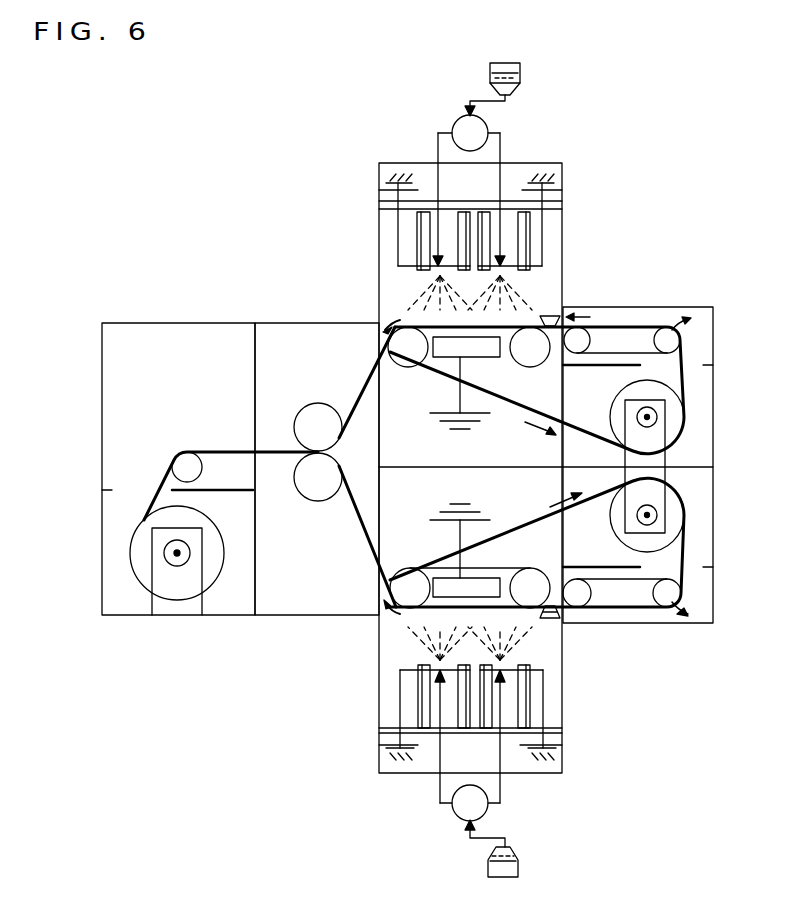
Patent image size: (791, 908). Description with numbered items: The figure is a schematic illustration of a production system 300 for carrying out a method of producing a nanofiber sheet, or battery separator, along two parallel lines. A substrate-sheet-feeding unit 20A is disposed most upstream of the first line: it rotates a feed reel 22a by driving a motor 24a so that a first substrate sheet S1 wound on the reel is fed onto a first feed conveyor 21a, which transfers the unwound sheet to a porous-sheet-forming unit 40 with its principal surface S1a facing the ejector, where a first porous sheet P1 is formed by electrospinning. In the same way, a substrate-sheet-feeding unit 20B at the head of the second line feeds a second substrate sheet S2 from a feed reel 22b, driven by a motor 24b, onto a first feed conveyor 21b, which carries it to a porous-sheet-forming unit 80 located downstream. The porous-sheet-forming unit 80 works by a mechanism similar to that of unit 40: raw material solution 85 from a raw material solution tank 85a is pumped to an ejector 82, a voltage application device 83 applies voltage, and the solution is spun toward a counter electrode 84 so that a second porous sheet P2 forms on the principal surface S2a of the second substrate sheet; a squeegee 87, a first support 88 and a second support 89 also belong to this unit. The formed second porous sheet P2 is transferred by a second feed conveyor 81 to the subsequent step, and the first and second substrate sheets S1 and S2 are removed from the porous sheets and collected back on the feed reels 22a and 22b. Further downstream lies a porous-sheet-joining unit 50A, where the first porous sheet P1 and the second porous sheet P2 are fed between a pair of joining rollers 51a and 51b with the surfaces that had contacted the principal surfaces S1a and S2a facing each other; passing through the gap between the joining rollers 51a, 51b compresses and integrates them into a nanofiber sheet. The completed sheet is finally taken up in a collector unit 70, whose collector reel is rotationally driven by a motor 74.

The porous-sheet-forming unit 40 is at (533, 158).
The production system 300 is at (735, 138).
The substrate-sheet-feeding unit 20A is at (630, 296).
The principal surface S1a is at (652, 325).
The joining roller 51a is at (313, 405).
The first porous sheet P1 is at (367, 380).
The first feed conveyor 21a is at (605, 366).
The first substrate sheet S1 is at (511, 408).
The feed reel 22a is at (650, 417).
The motor 24a is at (650, 457).
The motor 24b is at (650, 475).
The feed reel 22b is at (650, 515).
The first feed conveyor 21b is at (660, 575).
The second substrate sheet S2 is at (513, 526).
The second feed conveyor 81 is at (497, 564).
The joining roller 51b is at (311, 502).
The second porous sheet P2 is at (363, 532).
The motor 74 is at (175, 606).
The collector unit 70 is at (132, 628).
The porous-sheet-joining unit 50A is at (296, 625).
The counter electrode 84 is at (447, 594).
The squeegee 87 is at (550, 620).
The ejector 82 is at (523, 667).
The second support 89 is at (463, 701).
The first support 88 is at (378, 730).
The voltage application device 83 is at (562, 740).
The porous-sheet-forming unit 80 is at (520, 775).
The raw material solution 85 is at (515, 850).
The raw material solution tank 85a is at (520, 870).
The principal surface S2a is at (652, 612).
The substrate-sheet-feeding unit 20B is at (640, 640).